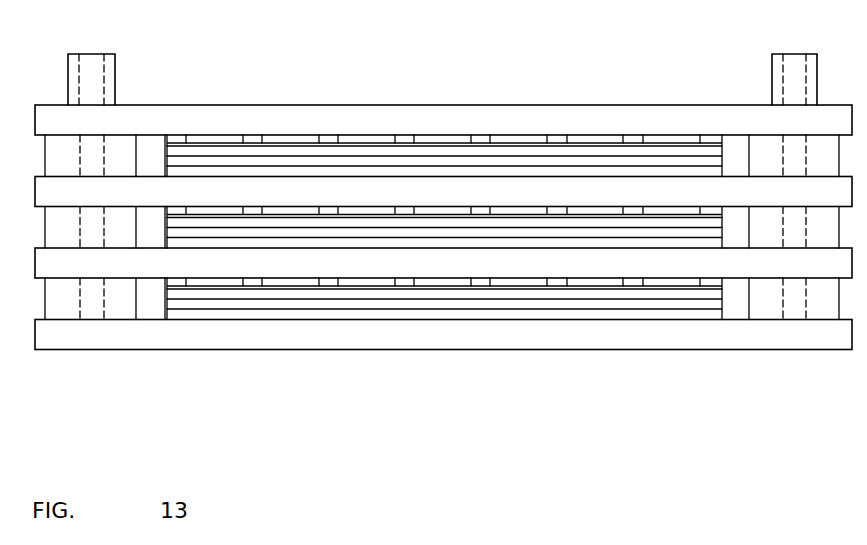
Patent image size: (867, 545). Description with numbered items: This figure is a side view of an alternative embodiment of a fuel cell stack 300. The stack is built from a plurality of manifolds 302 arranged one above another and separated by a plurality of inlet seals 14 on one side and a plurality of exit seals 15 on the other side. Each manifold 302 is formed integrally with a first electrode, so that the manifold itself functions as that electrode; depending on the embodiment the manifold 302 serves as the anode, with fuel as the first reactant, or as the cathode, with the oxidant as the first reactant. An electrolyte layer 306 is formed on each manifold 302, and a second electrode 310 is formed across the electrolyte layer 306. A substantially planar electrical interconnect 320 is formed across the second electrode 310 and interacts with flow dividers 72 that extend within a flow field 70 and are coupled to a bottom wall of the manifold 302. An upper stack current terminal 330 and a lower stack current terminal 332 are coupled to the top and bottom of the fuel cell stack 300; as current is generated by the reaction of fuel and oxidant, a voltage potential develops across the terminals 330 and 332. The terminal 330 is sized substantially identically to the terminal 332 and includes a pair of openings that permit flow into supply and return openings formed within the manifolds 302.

The fuel cell stack 300 is at (155, 50).
The upper stack current terminal 330 is at (740, 105).
The manifold 302 is at (815, 201).
The lower stack current terminal 332 is at (540, 338).
The inlet seal 14 is at (113, 143).
The exit seal 15 is at (762, 225).
The flow field 70 is at (438, 136).
The flow divider 72 is at (403, 140).
The electrical interconnect 320 is at (580, 147).
The second electrode 310 is at (617, 160).
The electrolyte layer 306 is at (654, 172).